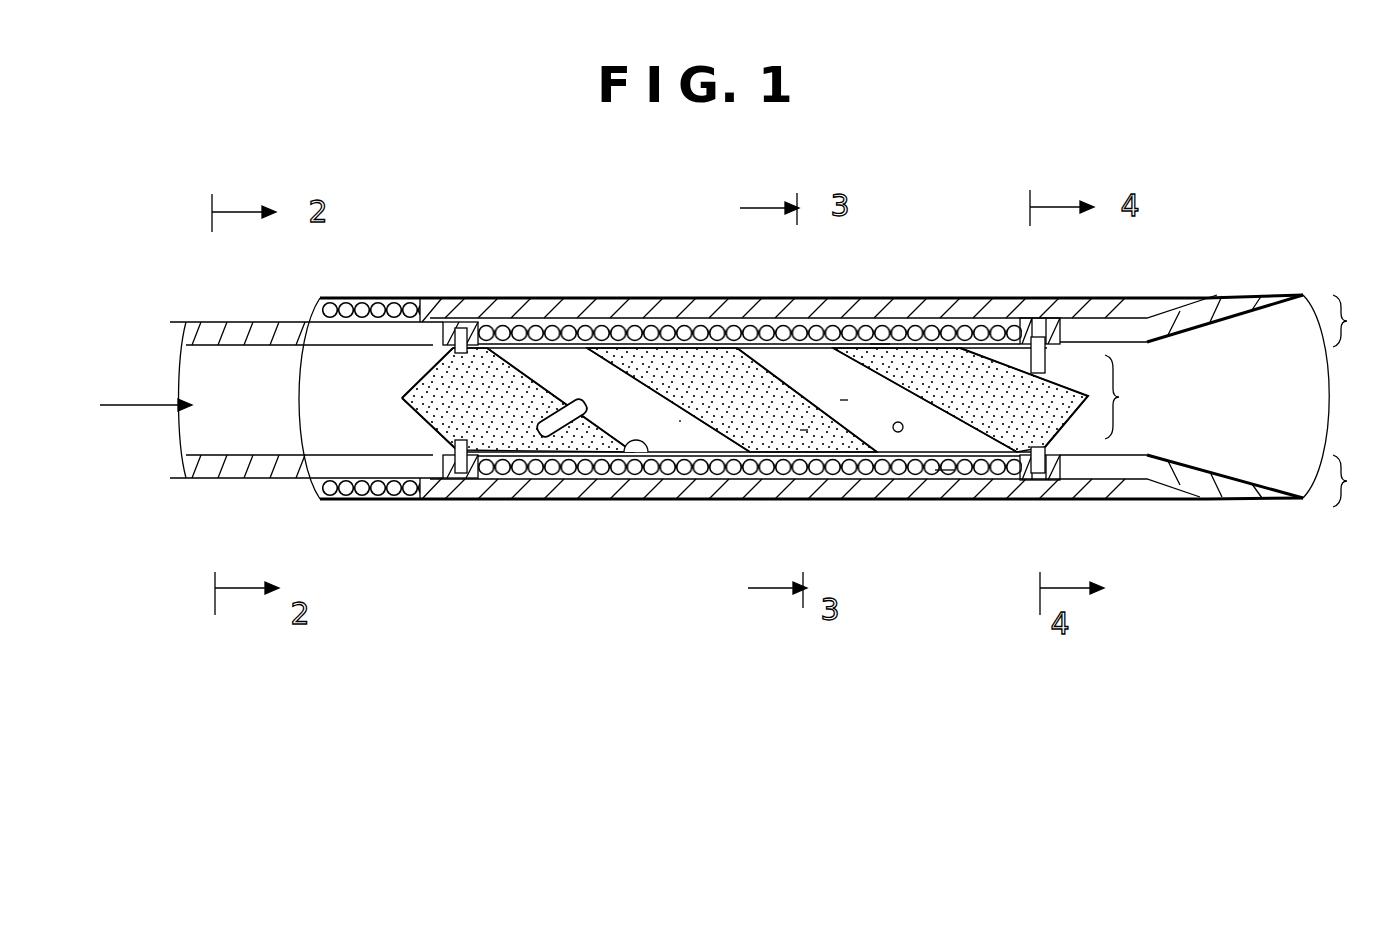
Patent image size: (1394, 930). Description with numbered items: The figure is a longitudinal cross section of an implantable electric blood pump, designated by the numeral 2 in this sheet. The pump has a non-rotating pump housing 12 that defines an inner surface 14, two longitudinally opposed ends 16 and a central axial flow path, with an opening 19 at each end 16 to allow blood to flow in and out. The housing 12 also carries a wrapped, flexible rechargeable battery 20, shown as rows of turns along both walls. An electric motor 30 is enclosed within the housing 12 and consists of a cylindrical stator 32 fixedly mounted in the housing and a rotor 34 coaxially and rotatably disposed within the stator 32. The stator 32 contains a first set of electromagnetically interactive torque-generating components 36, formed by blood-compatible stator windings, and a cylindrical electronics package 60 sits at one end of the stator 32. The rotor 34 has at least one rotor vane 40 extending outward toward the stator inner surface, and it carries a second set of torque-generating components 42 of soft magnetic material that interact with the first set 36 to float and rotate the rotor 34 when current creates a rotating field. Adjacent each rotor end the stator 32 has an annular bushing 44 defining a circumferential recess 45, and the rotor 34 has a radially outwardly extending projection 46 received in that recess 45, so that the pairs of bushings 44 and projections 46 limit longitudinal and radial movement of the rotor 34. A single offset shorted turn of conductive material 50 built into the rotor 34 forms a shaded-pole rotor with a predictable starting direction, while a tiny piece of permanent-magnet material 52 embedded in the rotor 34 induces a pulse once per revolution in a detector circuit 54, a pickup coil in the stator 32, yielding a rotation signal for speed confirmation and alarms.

The inhalation device 2 is at (242, 320).
The pump housing 12 is at (622, 292).
The inner surface 14 is at (784, 358).
The longitudinally opposed ends 16 is at (180, 333).
The opening 19 is at (183, 385).
The wrapped flexible rechargeable battery 20 is at (517, 305).
The electric motor 30 is at (673, 432).
The stator 32 is at (1363, 401).
The rotor 34 is at (1143, 397).
The first set of electromagnetically interactive torque-generating components 36 is at (878, 325).
The rotor vane 40 is at (806, 432).
The second set of torque-generating components 42 is at (843, 402).
The annular bushing 44 is at (458, 320).
The circumferential recess 45 is at (1042, 326).
The radially outwardly extending projection 46 is at (447, 456).
The shorted turn of highly conductive material 50 is at (543, 434).
The permanent-magnet material 52 is at (899, 433).
The detector circuit 54 is at (945, 470).
The cylindrical electronics package 60 is at (378, 292).